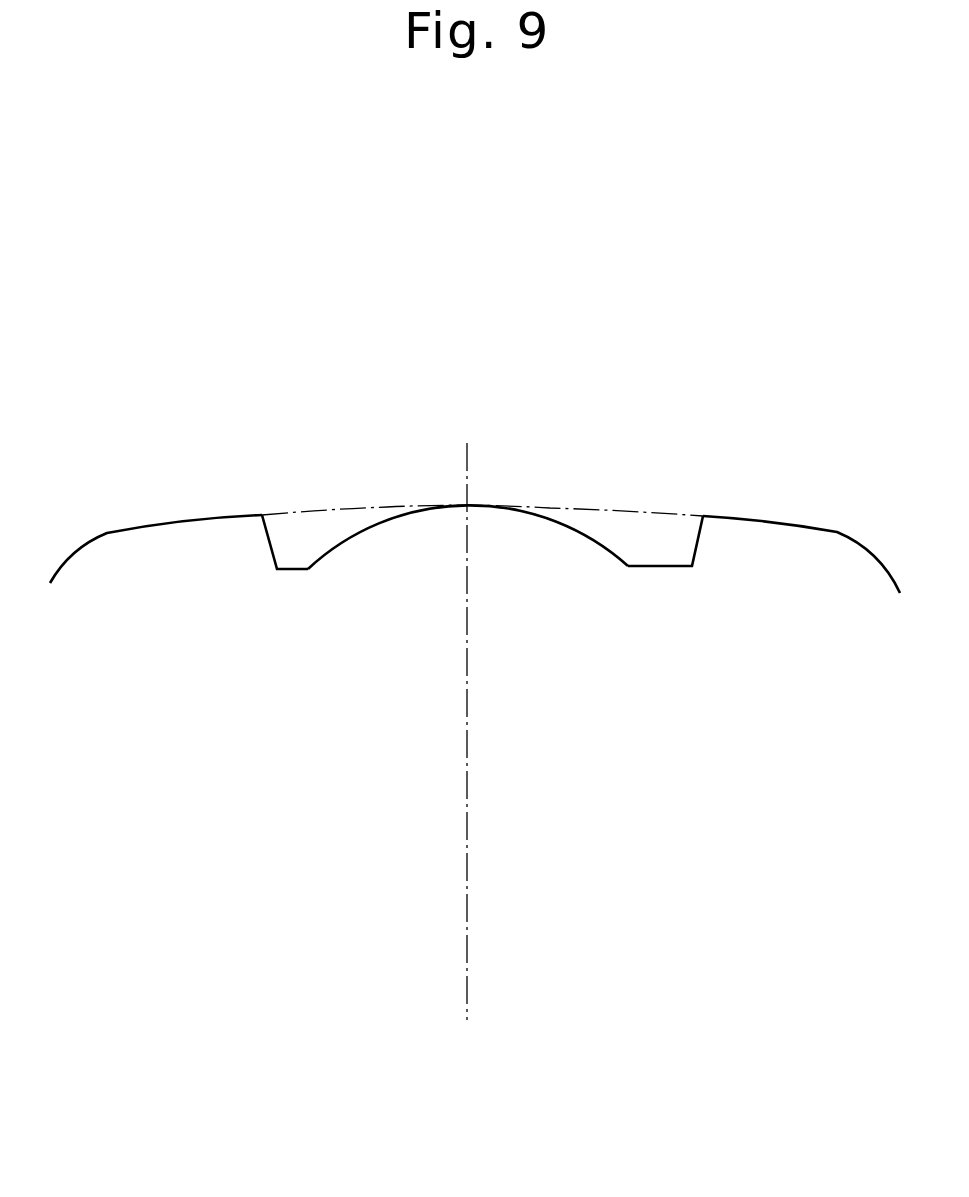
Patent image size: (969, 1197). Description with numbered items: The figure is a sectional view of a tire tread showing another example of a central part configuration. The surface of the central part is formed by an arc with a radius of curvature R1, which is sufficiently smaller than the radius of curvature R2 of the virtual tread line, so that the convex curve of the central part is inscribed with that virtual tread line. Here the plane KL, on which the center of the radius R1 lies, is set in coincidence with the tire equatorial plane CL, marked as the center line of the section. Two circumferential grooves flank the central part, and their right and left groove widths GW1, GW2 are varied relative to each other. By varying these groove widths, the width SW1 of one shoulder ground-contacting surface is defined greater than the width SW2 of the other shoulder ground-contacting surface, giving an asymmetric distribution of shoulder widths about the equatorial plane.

The width of one shoulder ground-contacting surface SW1 is at (262, 515).
The groove width of first circumferential groove GW1 is at (387, 518).
The groove width of second circumferential groove GW2 is at (703, 516).
The width of the other shoulder ground-contacting surface SW2 is at (837, 532).
The radius of curvature of central part surface R1 is at (468, 795).
The radius of curvature of virtual tread line R2 is at (467, 1002).